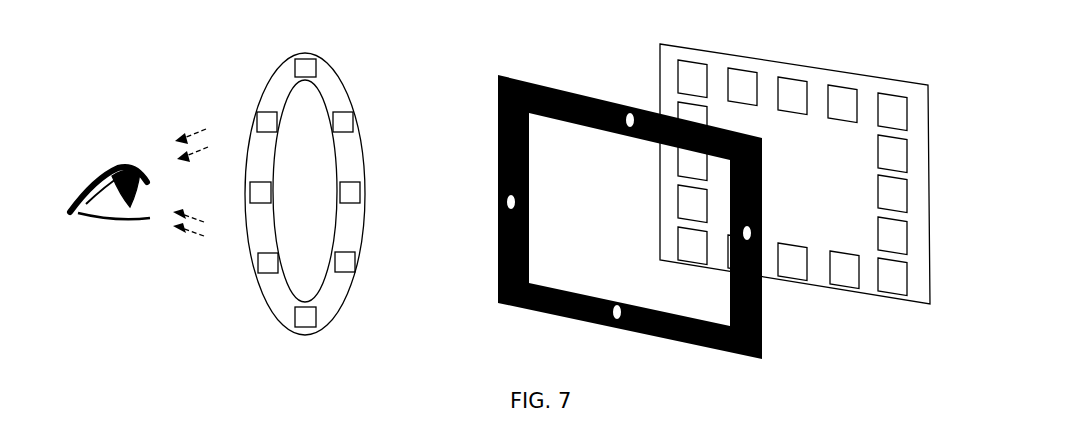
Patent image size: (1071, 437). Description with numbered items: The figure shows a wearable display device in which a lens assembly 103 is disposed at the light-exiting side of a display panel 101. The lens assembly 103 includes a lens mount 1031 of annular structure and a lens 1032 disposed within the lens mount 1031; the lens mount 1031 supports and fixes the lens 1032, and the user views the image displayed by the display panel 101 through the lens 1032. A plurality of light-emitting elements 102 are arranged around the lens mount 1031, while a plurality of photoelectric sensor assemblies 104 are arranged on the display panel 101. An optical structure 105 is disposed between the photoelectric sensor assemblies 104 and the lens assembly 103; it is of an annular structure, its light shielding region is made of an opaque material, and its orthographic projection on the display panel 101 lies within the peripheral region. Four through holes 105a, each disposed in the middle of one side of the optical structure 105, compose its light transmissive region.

The display panel 101 is at (823, 174).
The light-emitting element 102 is at (345, 261).
The lens assembly 103 is at (345, 202).
The lens mount 1031 is at (340, 282).
The lens 1032 is at (303, 275).
The photoelectric sensor assembly 104 is at (893, 198).
The optical structure 105 is at (663, 223).
The through hole 105a is at (616, 320).